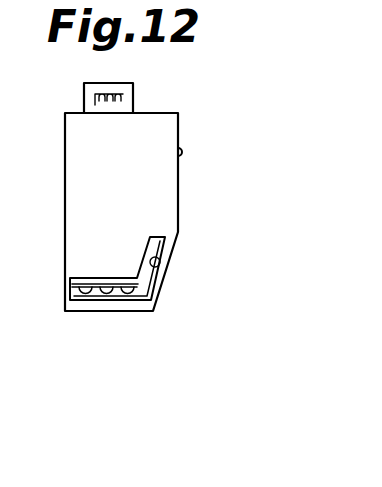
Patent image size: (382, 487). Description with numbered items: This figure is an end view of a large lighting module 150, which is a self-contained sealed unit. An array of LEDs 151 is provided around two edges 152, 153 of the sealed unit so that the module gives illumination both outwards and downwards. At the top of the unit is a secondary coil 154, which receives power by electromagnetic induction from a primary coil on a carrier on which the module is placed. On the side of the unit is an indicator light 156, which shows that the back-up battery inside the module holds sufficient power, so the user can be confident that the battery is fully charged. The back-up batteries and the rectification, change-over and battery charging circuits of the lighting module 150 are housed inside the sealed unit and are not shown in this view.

The lighting module 150 is at (95, 167).
The array of LEDs 151 is at (107, 298).
The edge 152 is at (165, 278).
The edge 153 is at (136, 300).
The secondary coil 154 is at (133, 102).
The indicator light 156 is at (183, 151).